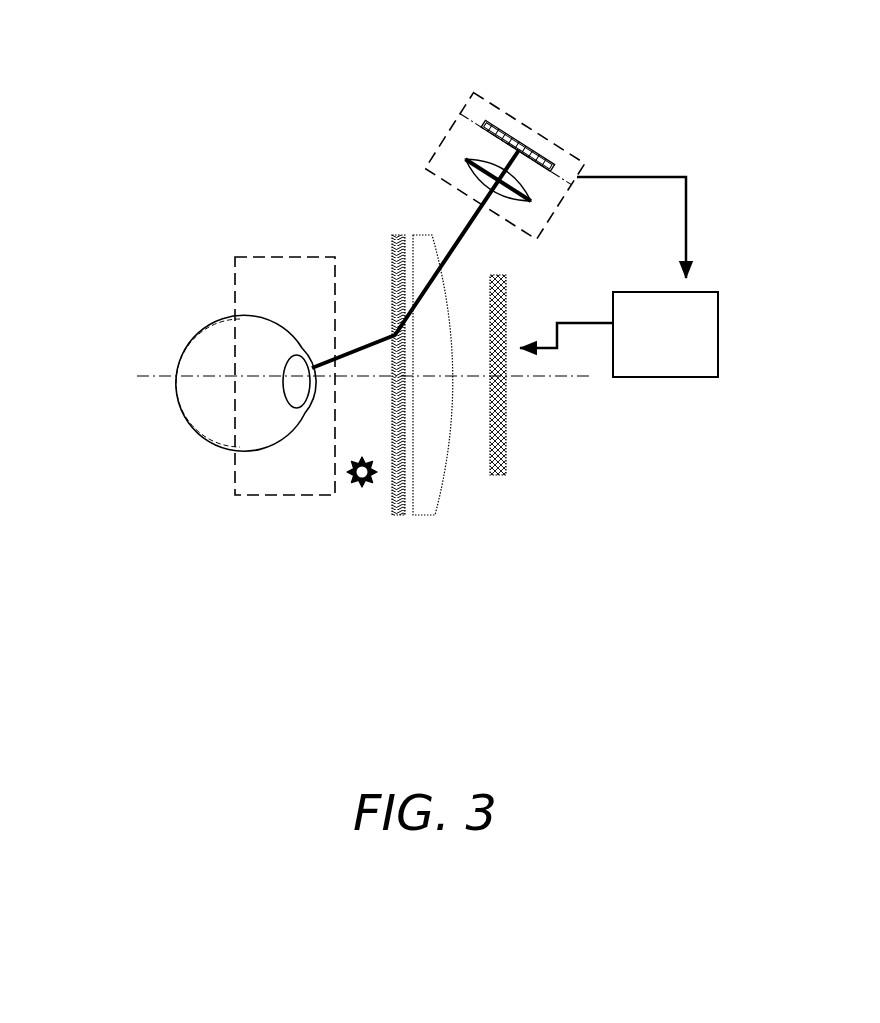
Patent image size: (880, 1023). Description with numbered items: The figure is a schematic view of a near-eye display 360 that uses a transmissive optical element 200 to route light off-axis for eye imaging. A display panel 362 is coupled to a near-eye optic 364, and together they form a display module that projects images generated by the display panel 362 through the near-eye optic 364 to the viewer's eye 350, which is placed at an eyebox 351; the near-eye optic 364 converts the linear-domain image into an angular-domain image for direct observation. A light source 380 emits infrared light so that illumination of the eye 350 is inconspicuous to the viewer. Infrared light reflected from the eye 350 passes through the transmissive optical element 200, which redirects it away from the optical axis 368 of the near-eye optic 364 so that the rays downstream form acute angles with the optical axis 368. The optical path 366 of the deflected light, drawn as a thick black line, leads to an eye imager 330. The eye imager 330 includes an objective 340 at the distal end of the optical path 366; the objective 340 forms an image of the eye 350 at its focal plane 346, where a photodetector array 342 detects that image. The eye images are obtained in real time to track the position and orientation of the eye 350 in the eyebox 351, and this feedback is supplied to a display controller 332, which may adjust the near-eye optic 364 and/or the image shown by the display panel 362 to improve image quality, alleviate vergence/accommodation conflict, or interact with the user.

The transmissive optical element 200 is at (395, 517).
The eye imager 330 is at (445, 121).
The display controller 332 is at (647, 346).
The objective 340 is at (532, 203).
The photodetector array 342 is at (538, 140).
The focal plane 346 is at (563, 178).
The eye 350 is at (212, 407).
The eyebox 351 is at (282, 480).
The near-eye display 360 is at (126, 117).
The display panel 362 is at (493, 477).
The near-eye optic 364 is at (427, 507).
The optical path 366 is at (365, 349).
The optical axis 368 is at (548, 378).
The light source 380 is at (362, 486).